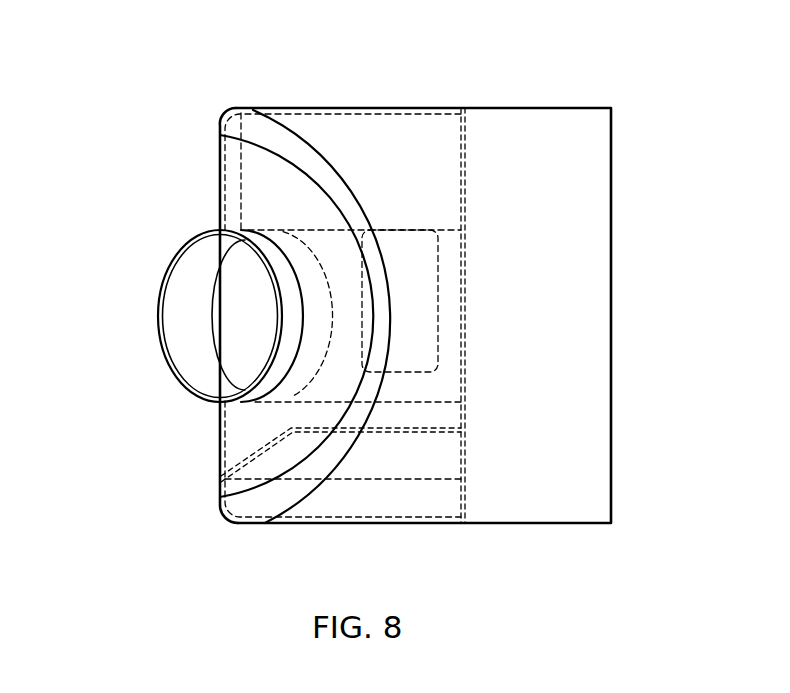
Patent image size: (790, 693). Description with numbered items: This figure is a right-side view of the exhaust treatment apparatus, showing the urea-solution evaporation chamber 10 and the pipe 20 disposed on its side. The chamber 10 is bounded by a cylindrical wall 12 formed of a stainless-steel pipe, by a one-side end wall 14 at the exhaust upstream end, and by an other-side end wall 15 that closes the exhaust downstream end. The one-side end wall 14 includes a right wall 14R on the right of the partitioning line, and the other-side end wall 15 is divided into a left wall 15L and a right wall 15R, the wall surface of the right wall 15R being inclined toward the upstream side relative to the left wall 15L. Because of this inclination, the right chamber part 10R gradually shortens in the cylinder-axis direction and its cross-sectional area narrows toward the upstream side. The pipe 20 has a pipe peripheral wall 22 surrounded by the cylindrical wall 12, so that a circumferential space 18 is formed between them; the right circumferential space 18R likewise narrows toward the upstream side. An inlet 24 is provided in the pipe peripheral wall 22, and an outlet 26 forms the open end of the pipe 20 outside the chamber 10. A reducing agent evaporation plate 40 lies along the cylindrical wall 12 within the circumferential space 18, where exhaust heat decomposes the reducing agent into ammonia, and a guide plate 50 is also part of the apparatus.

The urea-solution evaporation chamber 10 is at (349, 263).
The right chamber part 10R is at (349, 263).
The cylindrical wall 12 is at (311, 108).
The one-side end wall 14 is at (454, 291).
The right wall 14R is at (460, 163).
The other-side end wall 15 is at (163, 315).
The left wall 15L is at (218, 187).
The right wall 15R is at (258, 213).
The circumferential space 18 is at (263, 455).
The right circumferential space 18R is at (255, 433).
The pipe 20 is at (263, 316).
The pipe peripheral wall 22 is at (158, 311).
The inlet 24 is at (420, 302).
The outlet 26 is at (173, 345).
The reducing agent evaporation plate 40 is at (391, 470).
The guide plate 50 is at (365, 117).